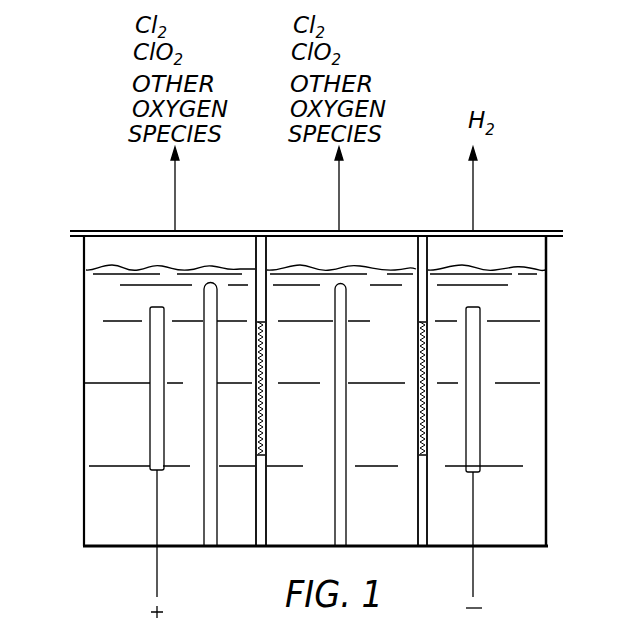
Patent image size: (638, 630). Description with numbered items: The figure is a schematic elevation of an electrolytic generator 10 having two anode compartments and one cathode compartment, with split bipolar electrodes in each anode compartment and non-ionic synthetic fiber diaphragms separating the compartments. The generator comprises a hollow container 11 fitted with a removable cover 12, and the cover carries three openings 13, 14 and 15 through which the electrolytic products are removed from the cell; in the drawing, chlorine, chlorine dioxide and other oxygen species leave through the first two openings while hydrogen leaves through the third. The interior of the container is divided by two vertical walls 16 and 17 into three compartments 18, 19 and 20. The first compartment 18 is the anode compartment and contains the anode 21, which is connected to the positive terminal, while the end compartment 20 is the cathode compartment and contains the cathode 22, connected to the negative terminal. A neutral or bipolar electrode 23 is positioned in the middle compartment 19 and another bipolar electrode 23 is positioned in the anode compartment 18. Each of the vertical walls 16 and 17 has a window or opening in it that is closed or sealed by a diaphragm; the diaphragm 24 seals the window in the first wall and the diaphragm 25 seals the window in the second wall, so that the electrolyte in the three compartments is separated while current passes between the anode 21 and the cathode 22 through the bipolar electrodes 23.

The electrolytic generator 10 is at (70, 337).
The hollow container 11 is at (512, 548).
The removable cover 12 is at (94, 231).
The opening 13 is at (173, 231).
The opening 14 is at (338, 231).
The opening 15 is at (472, 231).
The vertical wall 16 is at (256, 528).
The vertical wall 17 is at (427, 520).
The anode compartment 18 is at (97, 432).
The middle compartment 19 is at (382, 535).
The cathode compartment 20 is at (525, 418).
The anode 21 is at (150, 357).
The cathode 22 is at (480, 357).
The bipolar electrode 23 is at (204, 485).
The diaphragm 24 is at (266, 357).
The diaphragm 25 is at (418, 357).